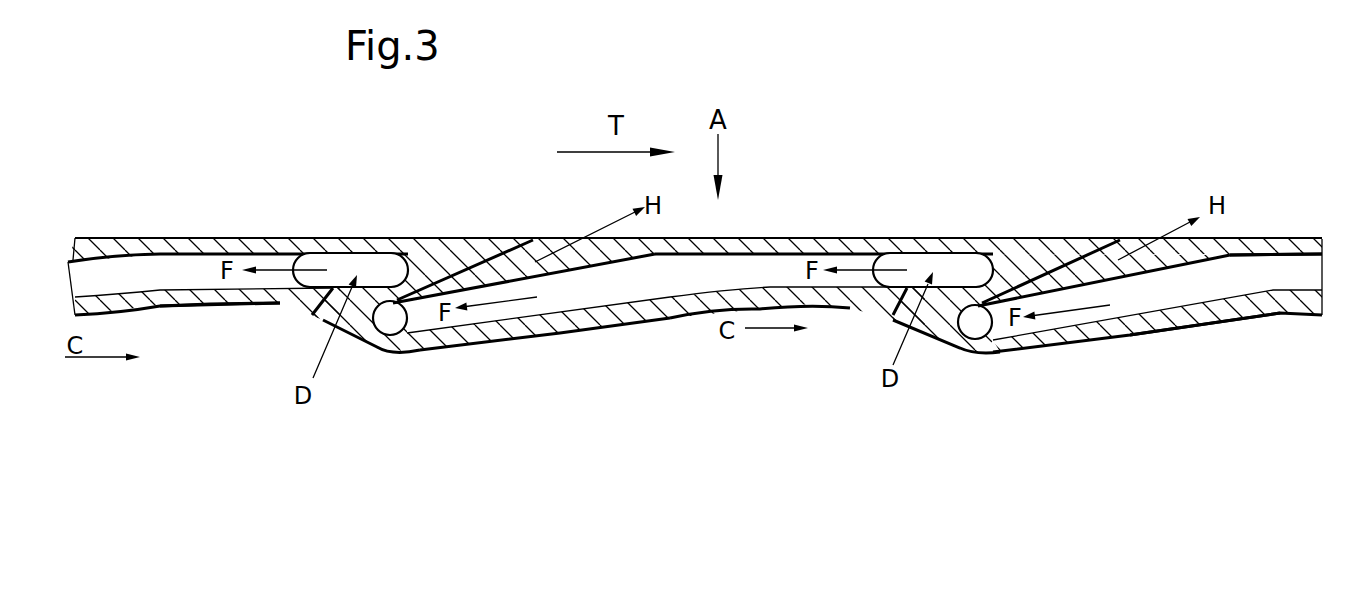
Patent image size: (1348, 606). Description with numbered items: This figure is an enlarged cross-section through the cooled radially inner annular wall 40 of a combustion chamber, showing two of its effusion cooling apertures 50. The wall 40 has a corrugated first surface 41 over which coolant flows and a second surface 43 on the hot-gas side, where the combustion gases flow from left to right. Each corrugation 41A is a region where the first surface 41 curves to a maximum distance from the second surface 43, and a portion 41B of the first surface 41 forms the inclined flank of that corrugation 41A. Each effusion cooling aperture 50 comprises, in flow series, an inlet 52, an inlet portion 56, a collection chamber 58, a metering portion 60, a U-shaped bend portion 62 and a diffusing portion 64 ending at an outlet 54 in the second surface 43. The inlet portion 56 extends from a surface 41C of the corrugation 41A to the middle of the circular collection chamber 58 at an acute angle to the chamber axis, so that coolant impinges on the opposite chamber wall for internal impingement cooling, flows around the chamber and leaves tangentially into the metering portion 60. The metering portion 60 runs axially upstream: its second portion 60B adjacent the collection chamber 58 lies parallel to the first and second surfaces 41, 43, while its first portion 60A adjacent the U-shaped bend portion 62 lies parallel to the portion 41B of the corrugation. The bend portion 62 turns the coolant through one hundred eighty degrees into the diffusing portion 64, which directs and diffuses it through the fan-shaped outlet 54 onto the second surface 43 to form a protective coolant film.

The effusion cooling aperture 50 is at (240, 262).
The metering portion 60 is at (107, 273).
The second portion of the metering portion 60B is at (162, 268).
The first portion of the metering portion 60A is at (612, 282).
The surface of the corrugation 41C is at (293, 307).
The portion of the first surface 41B is at (557, 335).
The corrugation 41A is at (397, 350).
The collection chamber 58 is at (372, 263).
The inlet 52 is at (323, 327).
The inlet portion 56 is at (346, 316).
The U-shaped bend portion 62 is at (392, 320).
The outlet 54 is at (553, 238).
The diffusing portion 64 is at (500, 268).
The second surface 43 is at (1032, 238).
The radially inner annular wall 40 is at (1247, 250).
The first surface 41 is at (1192, 332).